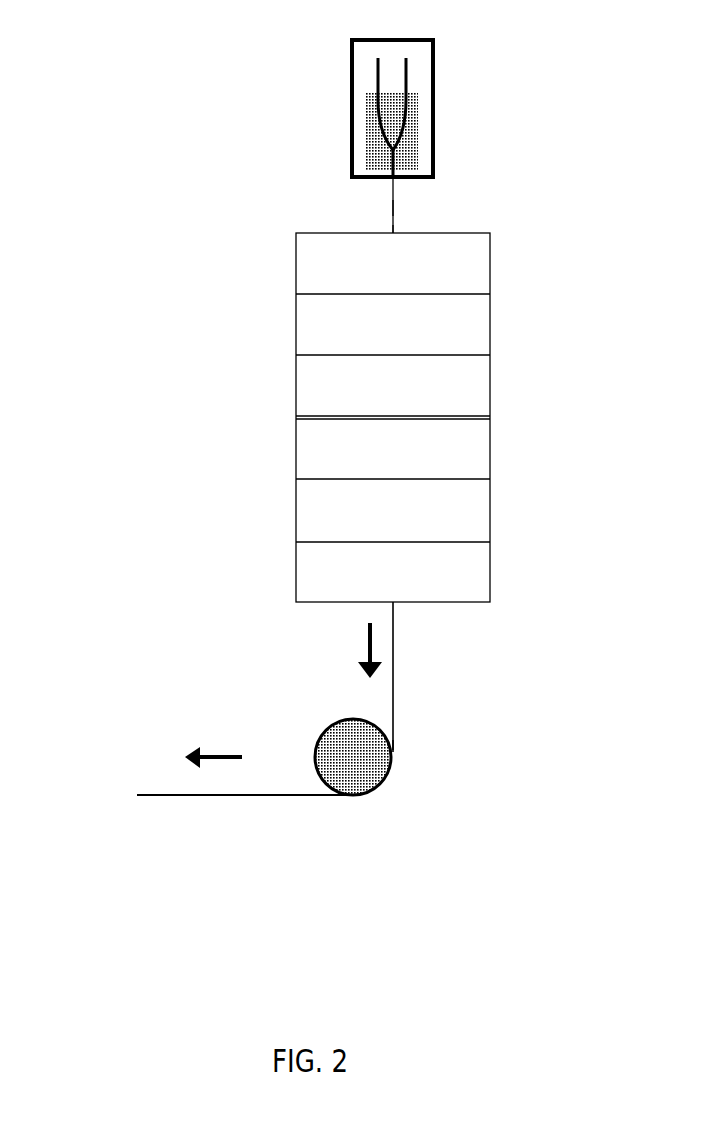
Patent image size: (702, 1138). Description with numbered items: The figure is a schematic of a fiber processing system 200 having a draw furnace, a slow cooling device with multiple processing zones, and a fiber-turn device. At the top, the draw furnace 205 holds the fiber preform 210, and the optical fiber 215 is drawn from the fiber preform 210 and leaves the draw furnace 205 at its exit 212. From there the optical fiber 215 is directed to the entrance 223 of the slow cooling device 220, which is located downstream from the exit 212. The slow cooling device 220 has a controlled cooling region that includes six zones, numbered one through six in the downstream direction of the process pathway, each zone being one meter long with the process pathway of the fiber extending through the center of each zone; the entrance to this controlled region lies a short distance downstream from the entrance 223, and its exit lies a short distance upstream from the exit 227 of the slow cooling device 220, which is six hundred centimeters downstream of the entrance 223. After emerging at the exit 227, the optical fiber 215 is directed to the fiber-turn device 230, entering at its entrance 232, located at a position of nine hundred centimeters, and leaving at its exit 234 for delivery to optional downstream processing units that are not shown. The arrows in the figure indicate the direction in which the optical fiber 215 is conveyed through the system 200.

The system 200 is at (184, 89).
The draw furnace 205 is at (352, 105).
The fiber preform 210 is at (392, 73).
The exit 212 is at (395, 180).
The optical fiber 215 is at (393, 208).
The slow cooling device 220 is at (296, 395).
The entrance 223 is at (390, 232).
The exit 227 is at (395, 604).
The fiber-turn device 230 is at (328, 725).
The entrance 232 is at (395, 748).
The exit 234 is at (350, 797).